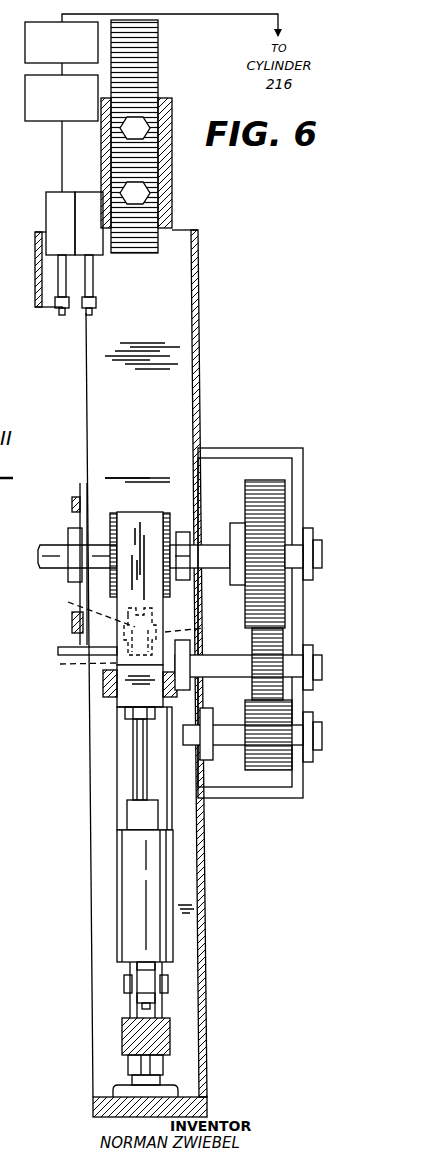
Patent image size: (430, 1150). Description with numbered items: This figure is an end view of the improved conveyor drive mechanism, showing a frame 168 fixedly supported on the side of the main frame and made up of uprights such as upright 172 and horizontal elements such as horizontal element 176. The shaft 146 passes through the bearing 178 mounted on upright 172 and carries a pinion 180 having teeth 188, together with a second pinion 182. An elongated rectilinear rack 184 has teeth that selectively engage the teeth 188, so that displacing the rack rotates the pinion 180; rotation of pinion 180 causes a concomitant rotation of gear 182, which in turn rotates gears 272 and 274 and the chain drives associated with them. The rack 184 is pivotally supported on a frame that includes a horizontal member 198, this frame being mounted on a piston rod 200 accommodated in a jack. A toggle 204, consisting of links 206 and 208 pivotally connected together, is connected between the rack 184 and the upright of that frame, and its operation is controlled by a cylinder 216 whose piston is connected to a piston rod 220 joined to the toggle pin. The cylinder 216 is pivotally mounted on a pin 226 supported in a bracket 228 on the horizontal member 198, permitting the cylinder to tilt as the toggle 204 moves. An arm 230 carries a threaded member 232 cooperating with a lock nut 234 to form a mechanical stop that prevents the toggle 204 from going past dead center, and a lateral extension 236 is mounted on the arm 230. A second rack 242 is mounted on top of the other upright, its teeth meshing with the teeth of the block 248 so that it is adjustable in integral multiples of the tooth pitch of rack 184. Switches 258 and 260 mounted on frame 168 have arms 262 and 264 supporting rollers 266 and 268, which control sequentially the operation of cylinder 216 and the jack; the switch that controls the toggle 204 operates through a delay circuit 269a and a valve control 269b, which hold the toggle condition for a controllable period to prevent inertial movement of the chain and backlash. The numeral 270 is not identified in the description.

The shaft 146 is at (40, 555).
The frame 168 is at (201, 392).
The upright 172 is at (94, 418).
The horizontal element 176 is at (106, 1110).
The bearing 178 is at (82, 490).
The pinion 180 is at (164, 520).
The second pinion 182 is at (258, 480).
The rack 184 is at (120, 500).
The teeth 188 is at (175, 527).
The horizontal member 198 is at (170, 1040).
The piston rod 200 is at (132, 1080).
The toggle 204 is at (112, 722).
The link 206 is at (113, 704).
The link 208 is at (115, 697).
The cylinder 216 is at (165, 884).
The piston rod 220 is at (137, 772).
The pin 226 is at (126, 984).
The bracket 228 is at (160, 998).
The arm 230 is at (203, 630).
The threaded member 232 is at (66, 675).
The lock nut 234 is at (70, 602).
The lateral extension 236 is at (60, 649).
The second rack 242 is at (160, 53).
The block 248 is at (12, 123).
The switch 258 is at (60, 192).
The switch 260 is at (85, 192).
The arm 262 is at (48, 288).
The arm 264 is at (92, 277).
The roller 266 is at (62, 315).
The roller 268 is at (92, 313).
The delay circuit 269a is at (61, 98).
The valve control 269b is at (61, 42).
The lead 270 is at (12, 381).
The gear 272 is at (255, 688).
The gear 274 is at (258, 757).